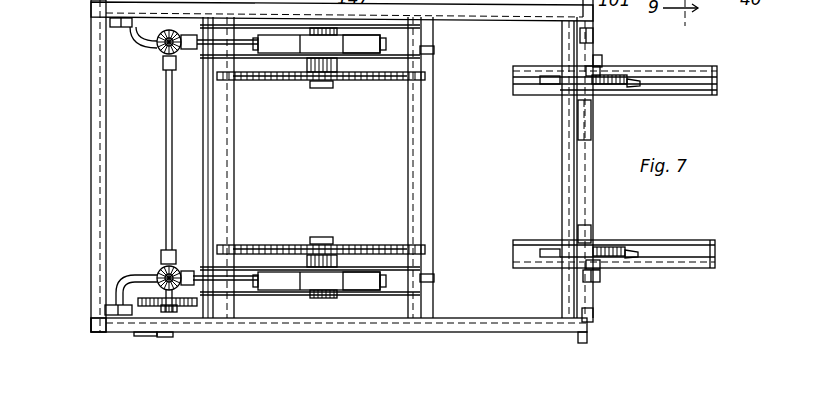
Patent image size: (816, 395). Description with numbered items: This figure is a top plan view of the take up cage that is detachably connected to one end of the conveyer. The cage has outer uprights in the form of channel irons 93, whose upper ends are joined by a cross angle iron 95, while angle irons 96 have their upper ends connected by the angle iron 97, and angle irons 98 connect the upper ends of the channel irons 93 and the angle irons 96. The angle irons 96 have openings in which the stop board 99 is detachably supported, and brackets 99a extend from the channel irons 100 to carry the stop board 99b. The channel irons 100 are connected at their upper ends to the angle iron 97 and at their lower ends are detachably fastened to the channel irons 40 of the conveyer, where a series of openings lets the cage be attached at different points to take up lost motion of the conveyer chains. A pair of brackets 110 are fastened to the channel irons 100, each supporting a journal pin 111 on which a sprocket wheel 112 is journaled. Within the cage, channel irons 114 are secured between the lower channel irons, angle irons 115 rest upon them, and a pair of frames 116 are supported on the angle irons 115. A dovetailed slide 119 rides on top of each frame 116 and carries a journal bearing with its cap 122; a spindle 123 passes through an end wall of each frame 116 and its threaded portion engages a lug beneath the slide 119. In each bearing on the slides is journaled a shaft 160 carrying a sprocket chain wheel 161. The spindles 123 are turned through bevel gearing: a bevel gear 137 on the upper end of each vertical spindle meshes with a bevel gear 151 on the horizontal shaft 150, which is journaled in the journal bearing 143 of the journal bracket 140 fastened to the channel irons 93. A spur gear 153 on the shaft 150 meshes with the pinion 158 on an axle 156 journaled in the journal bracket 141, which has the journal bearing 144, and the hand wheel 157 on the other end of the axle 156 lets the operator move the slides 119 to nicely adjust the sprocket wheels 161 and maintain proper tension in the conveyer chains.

The channel irons 40 is at (718, 90).
The channel irons 93 is at (103, 320).
The cross angle iron 95 is at (92, 146).
The angle irons 96 is at (593, 33).
The angle iron 97 is at (563, 190).
The angle irons 98 is at (505, 22).
The stop board 99 is at (587, 343).
The brackets 99a is at (597, 97).
The stop board 99b is at (588, 138).
The channel irons 100 is at (600, 278).
The brackets 110 is at (600, 72).
The journal pin 111 is at (608, 86).
The sprocket wheels 112 is at (636, 84).
The channel irons 114 is at (234, 150).
The angle irons 115 is at (210, 163).
The frames 116 is at (427, 50).
The dovetailed slide 119 is at (361, 162).
The cap 122 is at (319, 163).
The spindle 123 is at (247, 45).
The bevel gear 137 is at (157, 50).
The journal bracket 140 is at (120, 46).
The journal bracket 141 is at (137, 310).
The journal bearing 143 is at (168, 72).
The journal bearing 144 is at (177, 312).
The horizontal shaft 150 is at (166, 175).
The bevel gears 151 is at (177, 58).
The spur gear 153 is at (180, 292).
The axle 156 is at (168, 337).
The hand wheel 157 is at (143, 334).
The pinion 158 is at (215, 302).
The shaft 160 is at (323, 90).
The sprocket chain wheel 161 is at (373, 82).